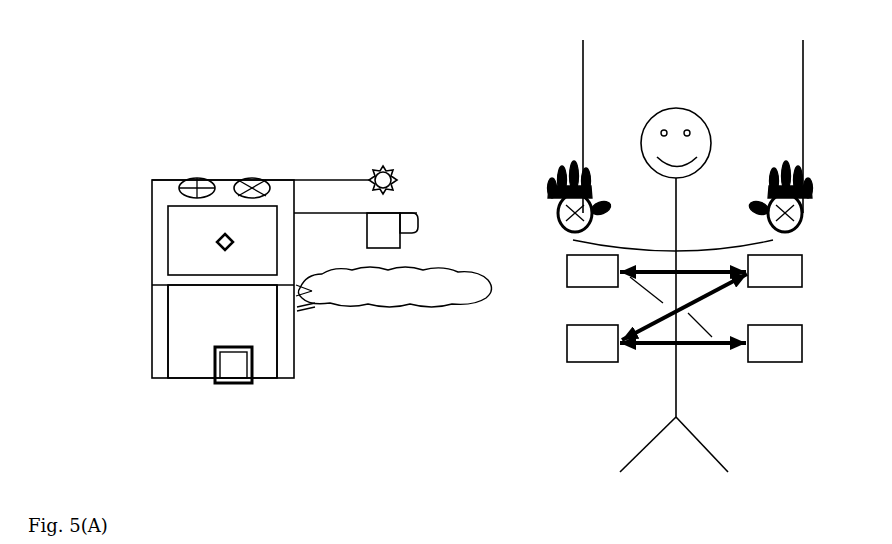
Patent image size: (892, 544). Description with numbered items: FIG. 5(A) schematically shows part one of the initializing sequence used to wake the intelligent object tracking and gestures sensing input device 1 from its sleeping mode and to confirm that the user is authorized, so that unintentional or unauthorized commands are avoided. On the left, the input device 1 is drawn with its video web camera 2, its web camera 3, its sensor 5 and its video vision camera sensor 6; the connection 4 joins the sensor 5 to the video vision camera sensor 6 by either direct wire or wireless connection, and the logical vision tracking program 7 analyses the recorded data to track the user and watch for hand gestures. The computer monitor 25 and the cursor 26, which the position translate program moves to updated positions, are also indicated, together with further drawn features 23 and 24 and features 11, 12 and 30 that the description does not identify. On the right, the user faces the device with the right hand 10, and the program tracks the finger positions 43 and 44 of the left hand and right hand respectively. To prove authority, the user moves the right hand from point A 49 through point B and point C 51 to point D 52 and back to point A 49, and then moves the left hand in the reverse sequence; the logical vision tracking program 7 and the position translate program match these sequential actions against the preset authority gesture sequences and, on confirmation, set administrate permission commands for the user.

The intelligent object tracking and gestures sensing input device 1 is at (160, 178).
The video web camera 2 is at (197, 178).
The web camera 3 is at (252, 178).
The connection 4 is at (350, 214).
The sensor 5 is at (383, 166).
The video vision camera sensor 6 is at (419, 212).
The logical vision tracking program 7 is at (453, 266).
The right hand 10 is at (572, 114).
The head 11 is at (676, 106).
The right arm 12 is at (805, 114).
The button 23 is at (212, 365).
The lower panel 24 is at (177, 312).
The computer monitor 25 is at (177, 268).
The cursor 26 is at (212, 232).
The movement arrows 30 is at (713, 284).
The left hand finger position 43 is at (548, 164).
The right hand finger position 44 is at (767, 164).
The point A 49 is at (620, 255).
The point C 51 is at (714, 356).
The point D 52 is at (667, 308).